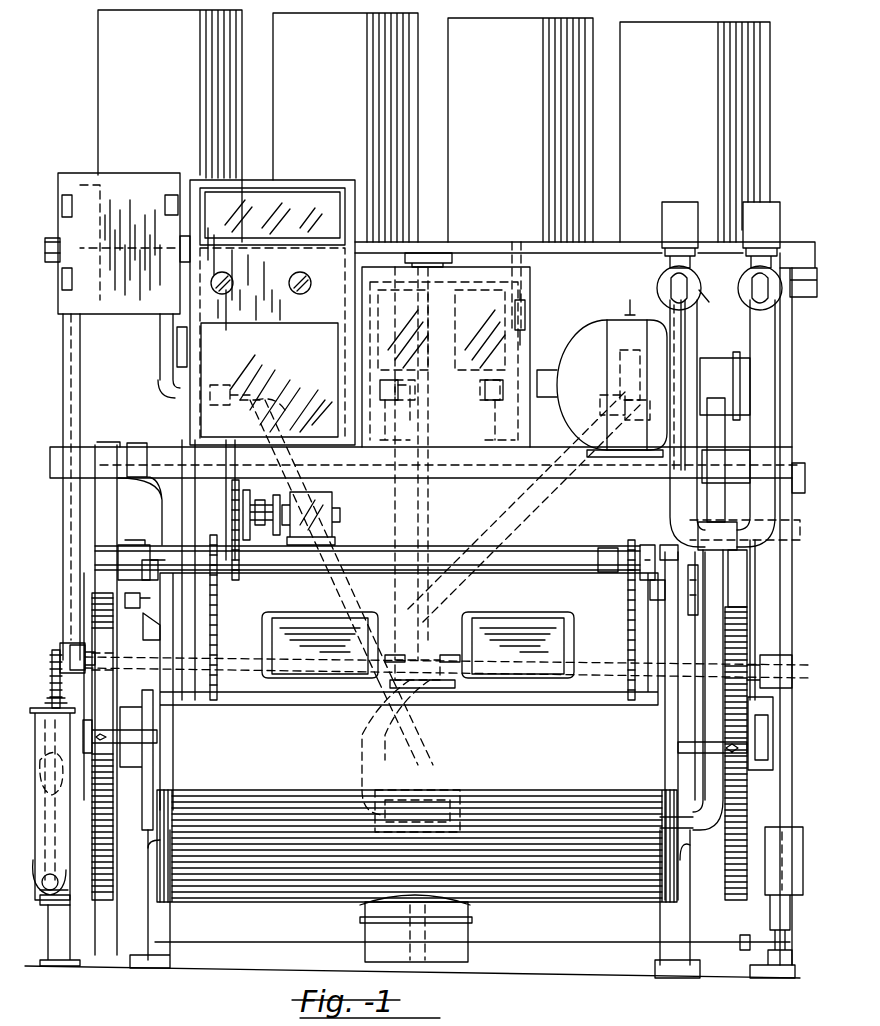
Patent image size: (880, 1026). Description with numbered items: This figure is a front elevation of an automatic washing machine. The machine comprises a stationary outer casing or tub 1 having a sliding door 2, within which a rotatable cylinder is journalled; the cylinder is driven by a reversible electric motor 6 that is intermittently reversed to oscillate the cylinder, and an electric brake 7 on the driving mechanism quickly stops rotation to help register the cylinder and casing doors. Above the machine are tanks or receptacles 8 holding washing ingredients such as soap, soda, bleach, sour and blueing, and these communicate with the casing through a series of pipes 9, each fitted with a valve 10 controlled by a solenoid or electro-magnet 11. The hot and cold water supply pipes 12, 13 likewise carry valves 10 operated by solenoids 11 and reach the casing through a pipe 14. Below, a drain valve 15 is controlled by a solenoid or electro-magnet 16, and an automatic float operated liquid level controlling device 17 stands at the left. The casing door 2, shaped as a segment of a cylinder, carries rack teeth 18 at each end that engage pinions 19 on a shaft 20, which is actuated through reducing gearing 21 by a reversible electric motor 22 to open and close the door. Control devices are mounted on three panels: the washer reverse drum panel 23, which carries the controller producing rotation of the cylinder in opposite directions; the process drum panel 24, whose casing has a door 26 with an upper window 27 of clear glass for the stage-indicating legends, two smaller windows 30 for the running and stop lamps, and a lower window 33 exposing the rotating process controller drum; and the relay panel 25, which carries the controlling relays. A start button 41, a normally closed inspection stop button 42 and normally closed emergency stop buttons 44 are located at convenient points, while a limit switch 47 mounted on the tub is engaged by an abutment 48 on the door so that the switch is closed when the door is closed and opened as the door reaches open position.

The outer casing or tub 1 is at (268, 880).
The sliding door 2 is at (600, 560).
The reversible electric motor 6 is at (583, 335).
The electric brake 7 is at (719, 366).
The tanks or receptacles 8 is at (198, 58).
The pipes 9 is at (512, 512).
The valve 10 is at (235, 405).
The solenoid or electro-magnet 11 is at (755, 210).
The hot water supply pipe 12 is at (762, 400).
The cold water supply pipe 13 is at (672, 472).
The pipe 14 is at (712, 788).
The drain valve 15 is at (385, 937).
The solenoid or electro-magnet 16 is at (785, 830).
The automatic float operated liquid level controlling device 17 is at (34, 905).
The rack teeth 18 is at (218, 603).
The pinions 19 is at (219, 530).
The shaft 20 is at (558, 560).
The reducing gearing 21 is at (275, 500).
The reversible electric motor 22 is at (315, 495).
The washer reverse drum panel 23 is at (482, 278).
The process drum panel 24 is at (308, 190).
The relay panel 25 is at (105, 185).
The door 26 is at (283, 190).
The upper window 27 is at (330, 210).
The smaller windows 30 is at (292, 280).
The lower window 33 is at (303, 345).
The start button 41 is at (118, 556).
The inspection stop button 42 is at (688, 585).
The emergency stop buttons 44 is at (125, 598).
The limit switch 47 is at (650, 590).
The abutment 48 is at (647, 545).